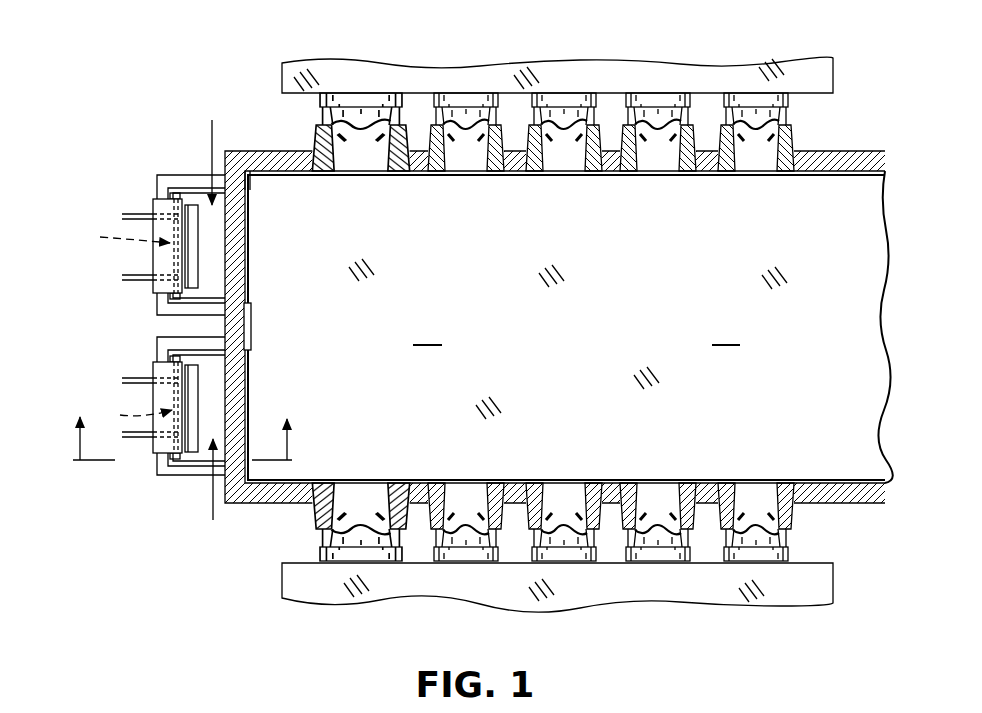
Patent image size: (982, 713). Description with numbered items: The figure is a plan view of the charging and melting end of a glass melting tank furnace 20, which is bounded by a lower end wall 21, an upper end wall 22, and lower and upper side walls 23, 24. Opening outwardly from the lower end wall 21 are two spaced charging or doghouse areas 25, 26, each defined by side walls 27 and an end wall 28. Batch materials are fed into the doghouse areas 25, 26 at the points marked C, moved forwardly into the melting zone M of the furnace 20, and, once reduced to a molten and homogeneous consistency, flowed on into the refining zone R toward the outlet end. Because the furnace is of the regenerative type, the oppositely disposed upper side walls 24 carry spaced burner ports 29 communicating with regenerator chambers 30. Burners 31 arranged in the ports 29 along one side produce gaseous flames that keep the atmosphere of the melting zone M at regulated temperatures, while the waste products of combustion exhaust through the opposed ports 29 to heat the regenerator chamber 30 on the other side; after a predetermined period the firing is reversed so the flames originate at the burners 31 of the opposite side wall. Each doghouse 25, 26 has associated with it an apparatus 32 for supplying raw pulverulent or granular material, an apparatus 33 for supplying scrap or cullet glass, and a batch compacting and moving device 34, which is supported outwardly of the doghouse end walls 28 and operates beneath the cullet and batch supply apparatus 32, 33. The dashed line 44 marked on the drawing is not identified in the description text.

The glass melting tank furnace 20 is at (188, 103).
The lower end wall 21 is at (253, 333).
The upper end wall 22 is at (250, 251).
The lower side wall 23 is at (298, 174).
The upper side wall 24 is at (267, 153).
The doghouse area 25 is at (109, 335).
The doghouse area 26 is at (143, 341).
The doghouse side wall 27 is at (193, 178).
The doghouse end wall 28 is at (164, 190).
The burner port 29 is at (467, 167).
The regenerator chamber 30 is at (288, 66).
The burner 31 is at (570, 508).
The batch material supplying apparatus 32 is at (188, 196).
The cullet supplying apparatus 33 is at (148, 205).
The batch compacting and moving device 34 is at (125, 268).
The optical axis 44 is at (133, 289).